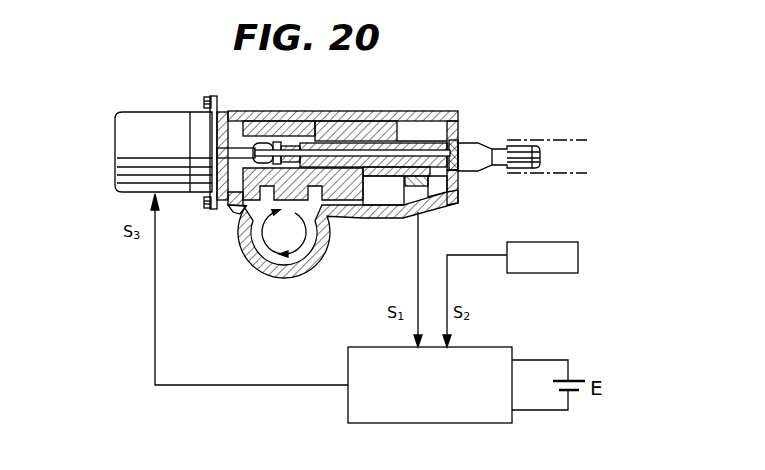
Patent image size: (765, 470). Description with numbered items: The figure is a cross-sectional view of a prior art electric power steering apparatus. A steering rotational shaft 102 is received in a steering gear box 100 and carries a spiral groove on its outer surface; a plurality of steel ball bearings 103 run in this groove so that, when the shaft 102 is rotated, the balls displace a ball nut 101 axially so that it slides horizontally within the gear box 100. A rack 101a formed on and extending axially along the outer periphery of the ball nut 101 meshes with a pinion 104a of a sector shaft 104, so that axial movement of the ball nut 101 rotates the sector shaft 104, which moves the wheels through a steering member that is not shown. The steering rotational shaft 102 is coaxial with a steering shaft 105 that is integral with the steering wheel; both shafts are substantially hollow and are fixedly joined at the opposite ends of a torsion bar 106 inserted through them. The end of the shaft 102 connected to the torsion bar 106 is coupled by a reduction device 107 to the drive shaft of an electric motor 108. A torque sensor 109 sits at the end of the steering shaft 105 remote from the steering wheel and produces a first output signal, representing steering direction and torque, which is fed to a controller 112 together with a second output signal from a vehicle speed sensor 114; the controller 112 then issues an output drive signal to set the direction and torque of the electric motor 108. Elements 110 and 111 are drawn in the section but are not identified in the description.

The steering gear box 100 is at (280, 110).
The ball nut 101 is at (384, 110).
The rack 101a is at (236, 216).
The steering rotational shaft 102 is at (410, 125).
The steel ball bearings 103 is at (345, 112).
The sector shaft 104 is at (300, 240).
The pinion 104a is at (318, 224).
The steering shaft 105 is at (482, 150).
The torsion bar 106 is at (319, 140).
The reduction device 107 is at (197, 110).
The electric motor 108 is at (135, 137).
The torque sensor 109 is at (428, 178).
The sensor 110 is at (434, 197).
The housing end wall 111 is at (455, 198).
The controller 112 is at (348, 405).
The vehicle speed sensor 114 is at (578, 255).